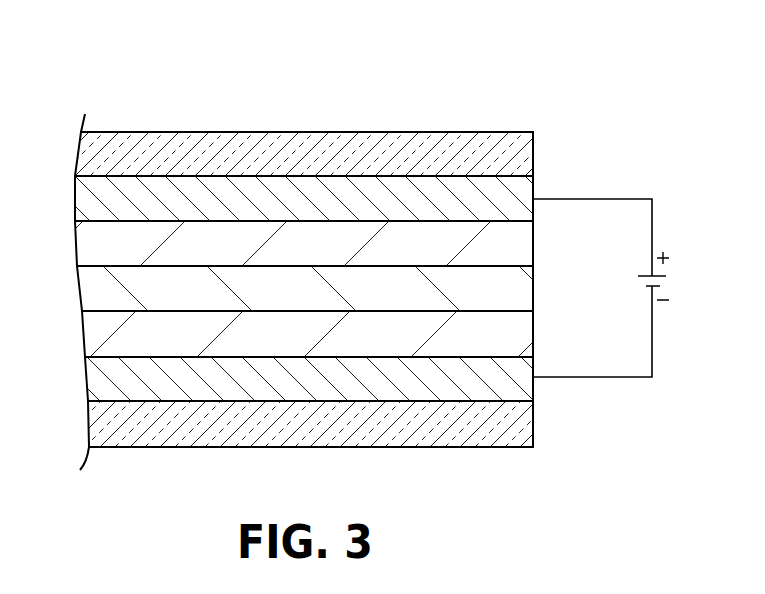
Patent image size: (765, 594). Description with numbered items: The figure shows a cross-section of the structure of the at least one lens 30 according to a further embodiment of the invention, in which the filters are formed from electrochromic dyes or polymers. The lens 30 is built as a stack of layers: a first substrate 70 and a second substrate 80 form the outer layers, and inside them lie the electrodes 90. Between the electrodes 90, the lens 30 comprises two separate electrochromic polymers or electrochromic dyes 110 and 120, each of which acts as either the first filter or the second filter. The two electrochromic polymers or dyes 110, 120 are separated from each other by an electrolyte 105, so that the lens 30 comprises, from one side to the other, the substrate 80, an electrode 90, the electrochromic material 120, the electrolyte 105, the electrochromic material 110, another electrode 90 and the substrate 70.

The lens 30 is at (389, 78).
The first substrate 70 is at (533, 423).
The second substrate 80 is at (533, 153).
The electrodes 90 is at (533, 190).
The electrolyte 105 is at (533, 288).
The electrochromic polymer or dye 110 is at (533, 333).
The electrochromic polymer or dye 120 is at (533, 245).